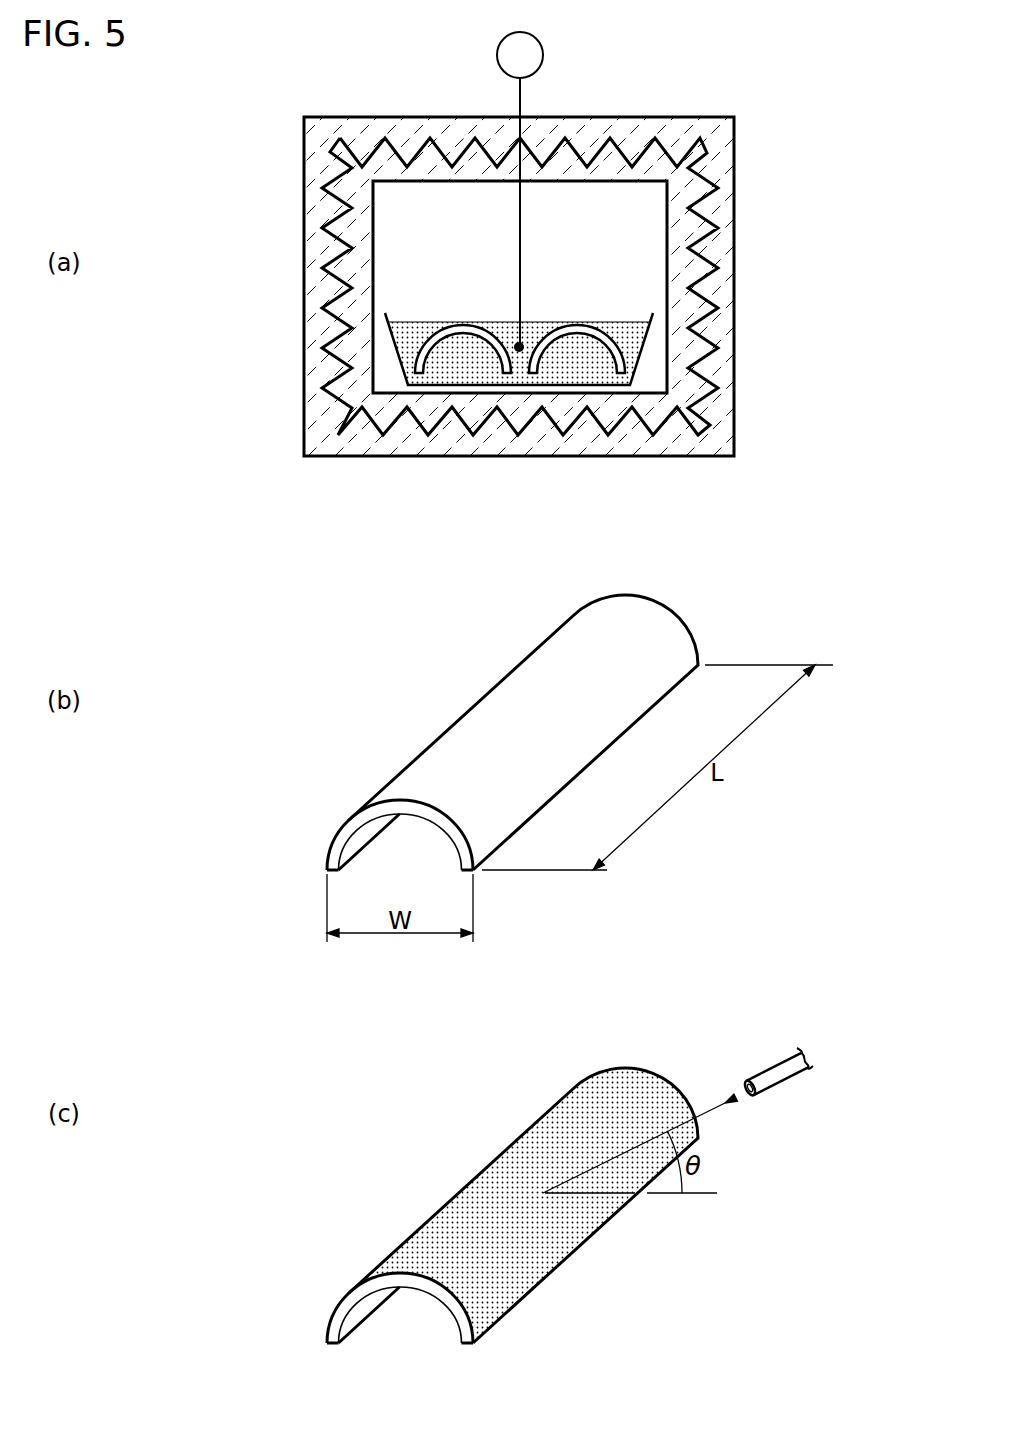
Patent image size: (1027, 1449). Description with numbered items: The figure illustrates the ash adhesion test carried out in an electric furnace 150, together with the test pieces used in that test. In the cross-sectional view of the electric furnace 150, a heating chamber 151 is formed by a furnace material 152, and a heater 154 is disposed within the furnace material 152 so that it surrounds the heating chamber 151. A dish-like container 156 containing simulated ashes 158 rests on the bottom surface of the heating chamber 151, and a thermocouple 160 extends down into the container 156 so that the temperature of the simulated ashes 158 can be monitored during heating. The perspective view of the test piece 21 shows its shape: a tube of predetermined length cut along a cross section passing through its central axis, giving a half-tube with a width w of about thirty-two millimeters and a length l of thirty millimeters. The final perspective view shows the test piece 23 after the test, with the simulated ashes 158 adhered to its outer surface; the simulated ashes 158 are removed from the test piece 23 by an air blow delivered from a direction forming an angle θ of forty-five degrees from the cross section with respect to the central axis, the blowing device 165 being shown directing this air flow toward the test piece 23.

The electric furnace 150 is at (318, 99).
The furnace material 152 is at (735, 160).
The heater 154 is at (719, 198).
The heating chamber 151 is at (667, 256).
The dish-like container 156 is at (645, 344).
The simulated ashes 158 is at (627, 322).
The thermocouple 160 is at (521, 100).
The test piece 21 is at (476, 328).
The test piece adhered with simulated ashes 23 is at (520, 1140).
The nozzle 165 is at (765, 1074).